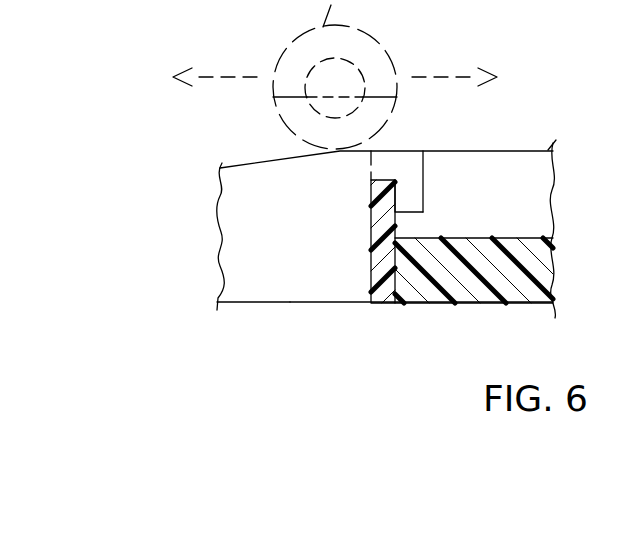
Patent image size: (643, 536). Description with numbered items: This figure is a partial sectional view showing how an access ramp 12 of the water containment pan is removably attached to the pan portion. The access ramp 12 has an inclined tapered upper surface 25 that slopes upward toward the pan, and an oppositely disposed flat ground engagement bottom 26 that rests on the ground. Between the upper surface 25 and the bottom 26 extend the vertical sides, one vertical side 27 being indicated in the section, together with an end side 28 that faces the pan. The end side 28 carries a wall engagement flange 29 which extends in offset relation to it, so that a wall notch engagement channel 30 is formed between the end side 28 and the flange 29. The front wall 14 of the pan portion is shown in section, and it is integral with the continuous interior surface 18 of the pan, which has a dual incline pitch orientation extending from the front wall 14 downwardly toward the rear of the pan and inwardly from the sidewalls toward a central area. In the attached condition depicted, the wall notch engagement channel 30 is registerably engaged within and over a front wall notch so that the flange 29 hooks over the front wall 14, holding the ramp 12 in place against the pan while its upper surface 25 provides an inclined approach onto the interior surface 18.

The access ramp 12 is at (213, 237).
The front wall 14 is at (390, 208).
The interior surface 18 is at (505, 224).
The inclined tapered upper surface 25 is at (259, 163).
The flat ground engagement bottom 26 is at (297, 302).
The vertical side 27 is at (248, 273).
The end side 28 is at (386, 255).
The wall engagement flange 29 is at (413, 171).
The wall notch engagement channel 30 is at (389, 180).